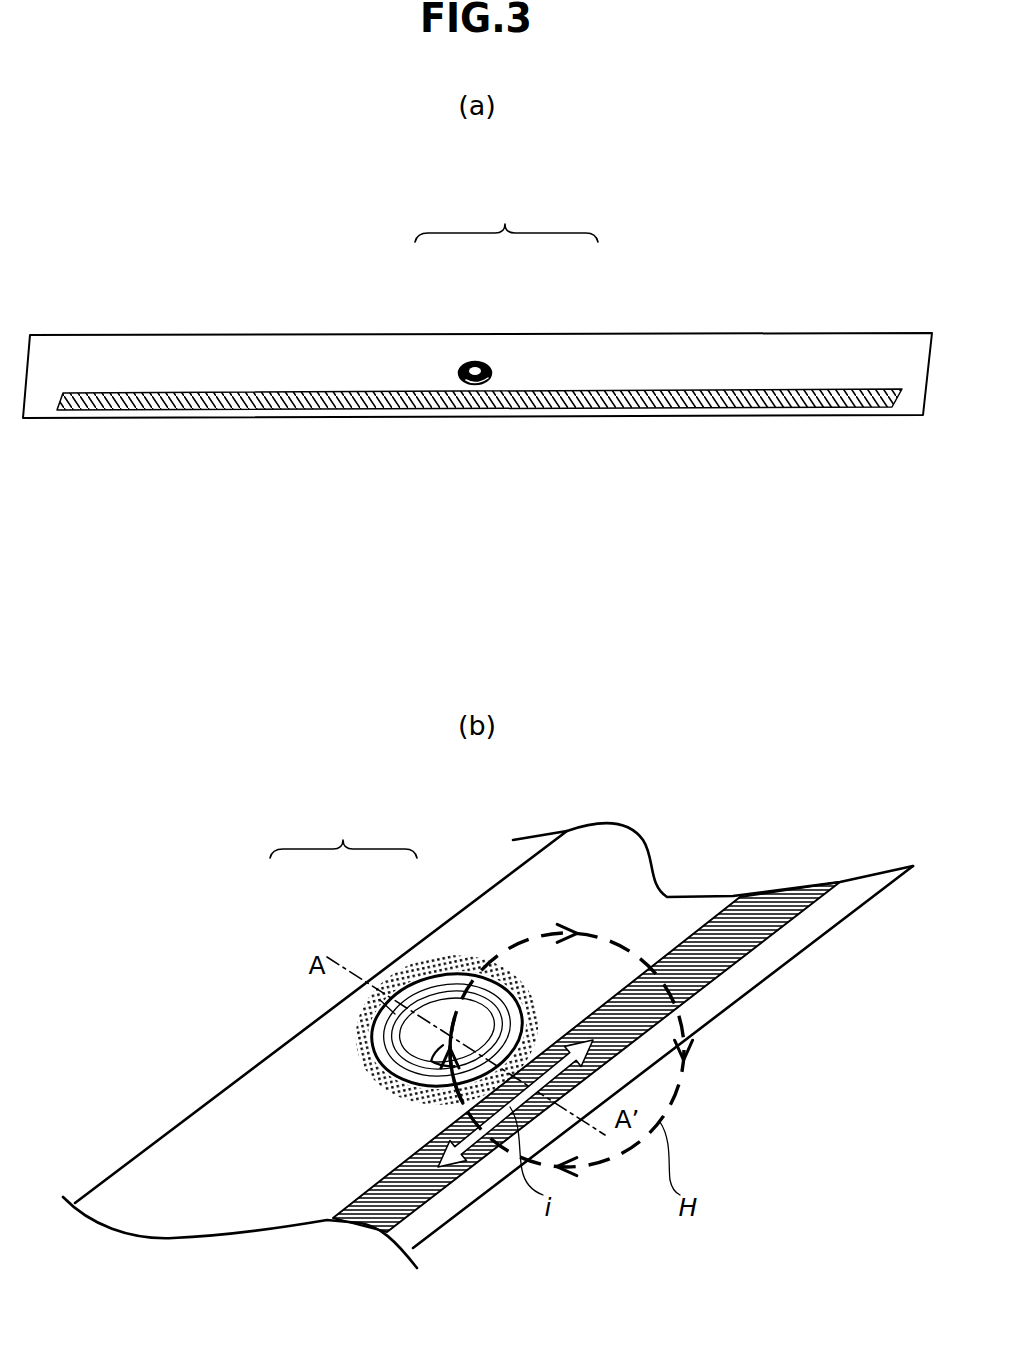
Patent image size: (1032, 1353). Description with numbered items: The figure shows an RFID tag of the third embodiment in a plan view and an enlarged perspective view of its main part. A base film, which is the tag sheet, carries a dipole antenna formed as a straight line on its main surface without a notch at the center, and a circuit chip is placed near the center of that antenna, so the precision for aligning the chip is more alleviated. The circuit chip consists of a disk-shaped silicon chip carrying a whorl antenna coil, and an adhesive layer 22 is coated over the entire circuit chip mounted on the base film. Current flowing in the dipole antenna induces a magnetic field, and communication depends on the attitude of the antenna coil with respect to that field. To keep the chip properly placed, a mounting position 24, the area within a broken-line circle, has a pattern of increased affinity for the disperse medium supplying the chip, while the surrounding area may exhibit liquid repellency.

The adhesive layer 22 is at (533, 372).
The mounting position 24 is at (353, 1053).